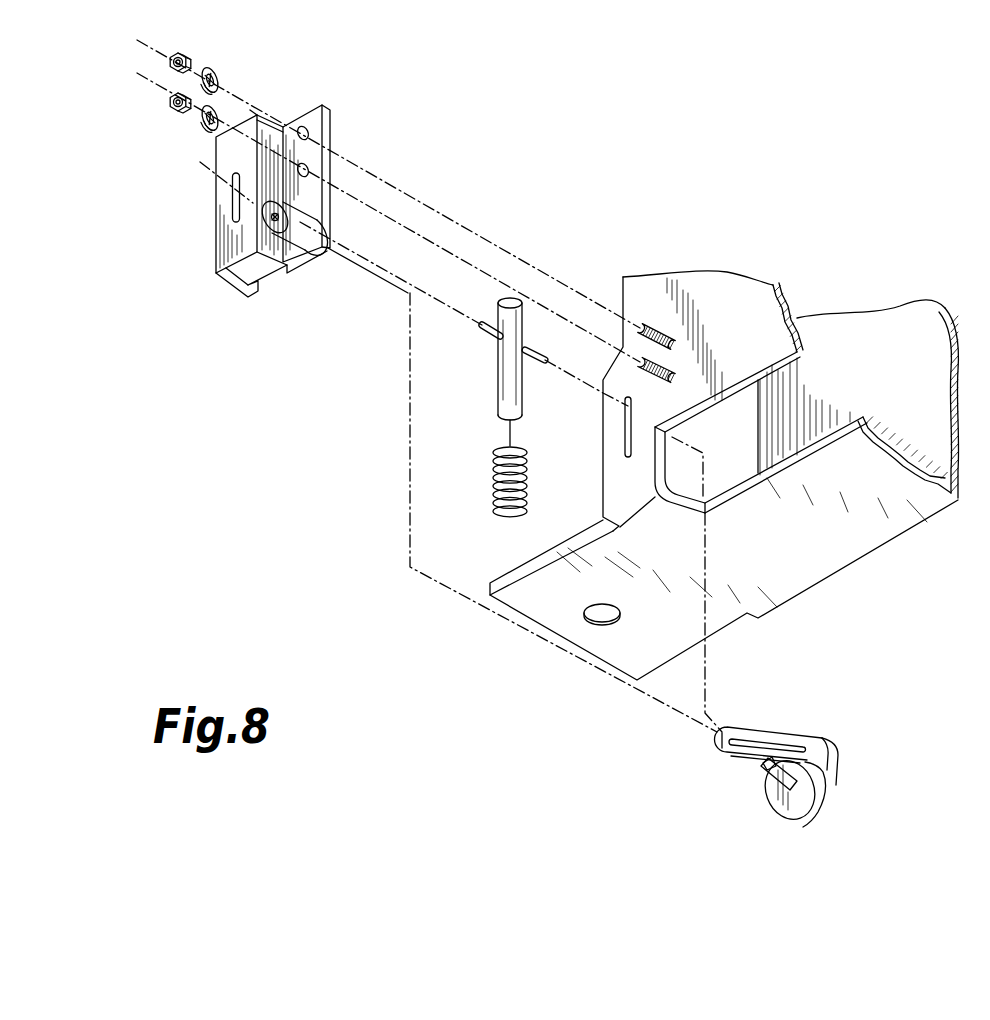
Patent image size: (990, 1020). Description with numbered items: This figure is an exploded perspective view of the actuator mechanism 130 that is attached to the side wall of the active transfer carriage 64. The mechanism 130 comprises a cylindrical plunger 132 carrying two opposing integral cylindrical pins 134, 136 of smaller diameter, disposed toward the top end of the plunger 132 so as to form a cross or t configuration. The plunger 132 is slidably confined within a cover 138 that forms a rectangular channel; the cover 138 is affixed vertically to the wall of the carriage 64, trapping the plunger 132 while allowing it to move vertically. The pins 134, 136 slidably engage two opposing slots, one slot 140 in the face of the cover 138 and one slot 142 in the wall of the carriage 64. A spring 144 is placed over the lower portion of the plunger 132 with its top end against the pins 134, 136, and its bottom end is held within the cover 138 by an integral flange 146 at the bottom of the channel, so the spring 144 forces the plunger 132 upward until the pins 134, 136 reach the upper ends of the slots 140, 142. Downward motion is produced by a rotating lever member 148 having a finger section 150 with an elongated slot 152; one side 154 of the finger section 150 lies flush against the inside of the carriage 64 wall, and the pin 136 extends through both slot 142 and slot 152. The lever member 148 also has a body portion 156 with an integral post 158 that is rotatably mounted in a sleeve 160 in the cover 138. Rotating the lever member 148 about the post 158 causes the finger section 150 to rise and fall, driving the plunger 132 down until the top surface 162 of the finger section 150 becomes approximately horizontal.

The active transfer carriage 64 is at (724, 475).
The actuator mechanism 130 is at (562, 203).
The cylindrical plunger 132 is at (500, 365).
The cylindrical pin 134 is at (490, 334).
The cylindrical pin 136 is at (534, 362).
The cover 138 is at (248, 204).
The slot 140 is at (230, 203).
The slot 142 is at (623, 440).
The spring 144 is at (493, 490).
The integral flange 146 is at (258, 281).
The rotating lever member 148 is at (785, 773).
The finger section 150 is at (780, 733).
The elongated slot 152 is at (772, 740).
The side of the finger section 154 is at (729, 762).
The body portion 156 is at (834, 787).
The integral post 158 is at (773, 800).
The sleeve 160 is at (300, 238).
The top surface of the finger section 162 is at (808, 733).